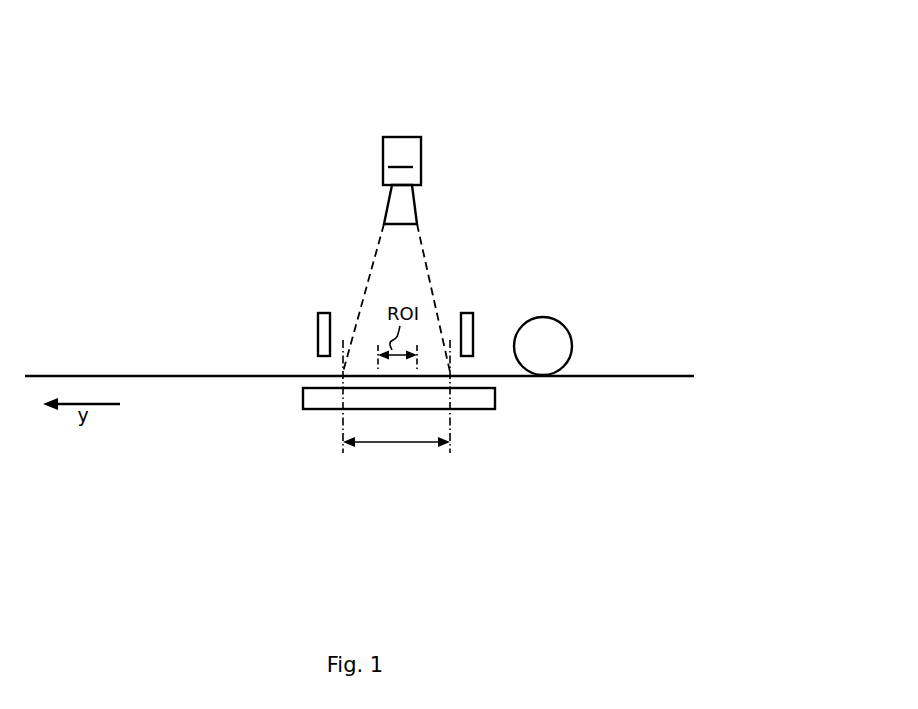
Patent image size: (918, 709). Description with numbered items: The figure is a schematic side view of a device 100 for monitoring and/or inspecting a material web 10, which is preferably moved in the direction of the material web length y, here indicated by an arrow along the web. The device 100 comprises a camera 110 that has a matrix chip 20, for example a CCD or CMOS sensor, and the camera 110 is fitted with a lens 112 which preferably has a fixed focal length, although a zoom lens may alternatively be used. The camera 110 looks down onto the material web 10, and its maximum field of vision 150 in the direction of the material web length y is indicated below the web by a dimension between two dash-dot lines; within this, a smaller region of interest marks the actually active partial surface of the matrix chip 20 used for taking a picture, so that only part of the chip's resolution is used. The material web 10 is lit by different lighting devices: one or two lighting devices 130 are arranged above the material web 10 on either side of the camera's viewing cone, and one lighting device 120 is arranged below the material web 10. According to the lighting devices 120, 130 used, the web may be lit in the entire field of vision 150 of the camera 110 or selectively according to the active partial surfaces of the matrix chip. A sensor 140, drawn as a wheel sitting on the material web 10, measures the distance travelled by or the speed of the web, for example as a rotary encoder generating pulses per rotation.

The device 100 is at (523, 80).
The material web 10 is at (33, 376).
The matrix chip 20 is at (399, 165).
The camera 110 is at (423, 164).
The lens 112 is at (416, 205).
The lighting device 120 is at (478, 410).
The lighting devices 130 is at (316, 333).
The sensor 140 is at (557, 320).
The maximum field of vision 150 is at (393, 445).